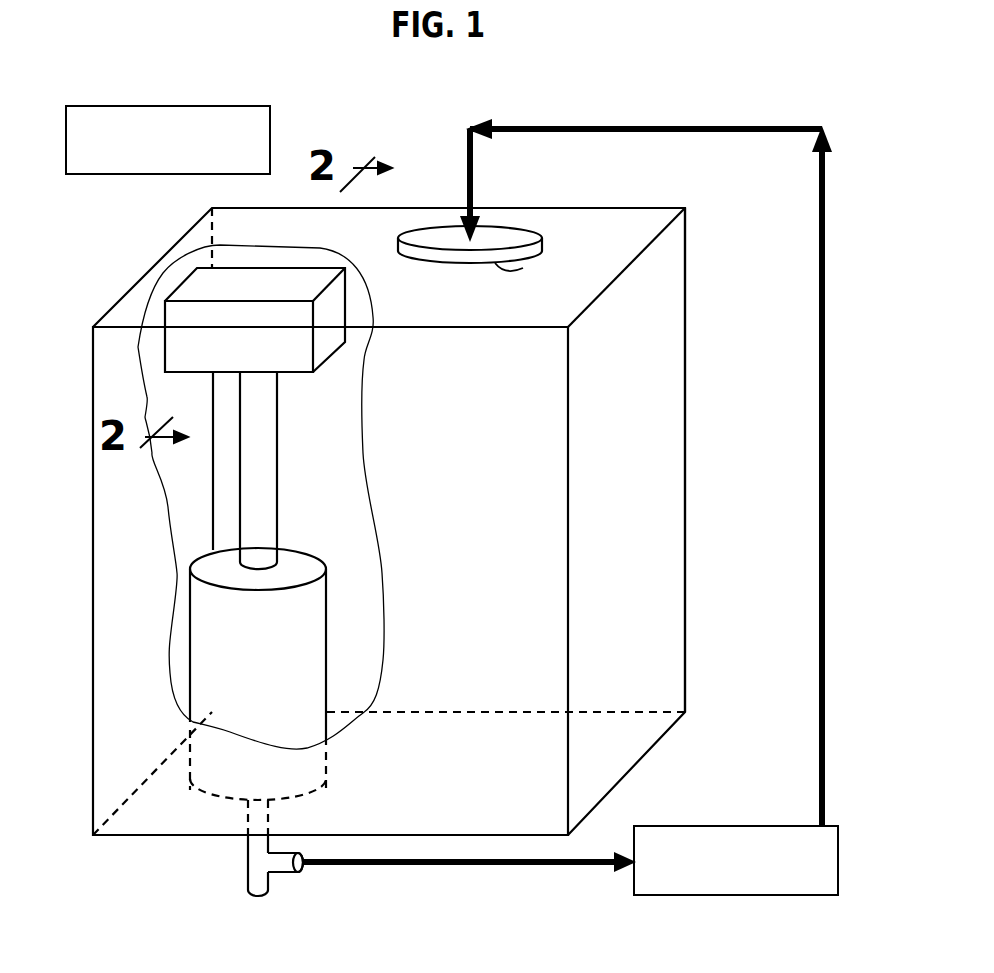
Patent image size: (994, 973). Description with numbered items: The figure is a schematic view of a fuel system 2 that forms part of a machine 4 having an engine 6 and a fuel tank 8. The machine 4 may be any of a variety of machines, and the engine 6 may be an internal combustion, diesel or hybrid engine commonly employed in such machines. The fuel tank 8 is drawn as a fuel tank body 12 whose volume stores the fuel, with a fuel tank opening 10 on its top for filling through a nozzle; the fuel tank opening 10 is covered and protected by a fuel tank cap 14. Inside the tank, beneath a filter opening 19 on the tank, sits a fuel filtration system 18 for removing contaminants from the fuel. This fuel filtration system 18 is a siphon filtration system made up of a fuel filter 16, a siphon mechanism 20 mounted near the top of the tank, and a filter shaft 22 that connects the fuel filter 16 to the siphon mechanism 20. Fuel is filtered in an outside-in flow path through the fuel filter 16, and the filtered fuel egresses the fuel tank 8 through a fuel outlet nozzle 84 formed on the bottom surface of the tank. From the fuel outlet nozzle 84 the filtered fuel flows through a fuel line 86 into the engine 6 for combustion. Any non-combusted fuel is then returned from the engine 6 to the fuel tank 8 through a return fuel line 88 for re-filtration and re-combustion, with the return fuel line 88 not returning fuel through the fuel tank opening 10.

The fuel system 2 is at (681, 86).
The machine 4 is at (270, 140).
The engine 6 is at (742, 826).
The fuel tank 8 is at (700, 457).
The fuel tank opening 10 is at (523, 268).
The fuel tank body 12 is at (670, 560).
The fuel tank cap 14 is at (508, 232).
The fuel filter 16 is at (213, 647).
The fuel filtration system 18 is at (338, 388).
The filter opening 19 is at (215, 353).
The siphon mechanism 20 is at (200, 282).
The filter shaft 22 is at (247, 485).
The fuel outlet nozzle 84 is at (283, 872).
The fuel line 86 is at (477, 866).
The return fuel line 88 is at (822, 670).